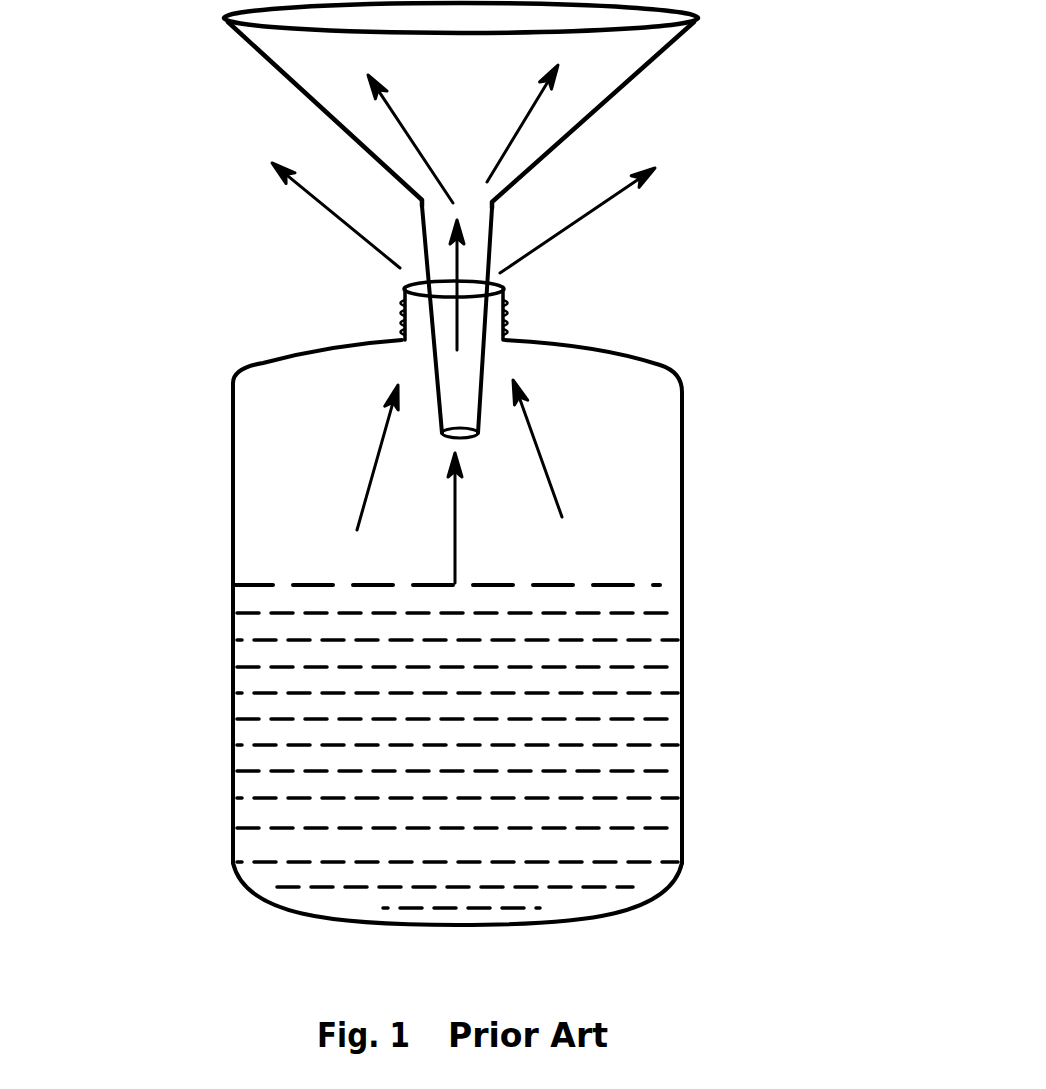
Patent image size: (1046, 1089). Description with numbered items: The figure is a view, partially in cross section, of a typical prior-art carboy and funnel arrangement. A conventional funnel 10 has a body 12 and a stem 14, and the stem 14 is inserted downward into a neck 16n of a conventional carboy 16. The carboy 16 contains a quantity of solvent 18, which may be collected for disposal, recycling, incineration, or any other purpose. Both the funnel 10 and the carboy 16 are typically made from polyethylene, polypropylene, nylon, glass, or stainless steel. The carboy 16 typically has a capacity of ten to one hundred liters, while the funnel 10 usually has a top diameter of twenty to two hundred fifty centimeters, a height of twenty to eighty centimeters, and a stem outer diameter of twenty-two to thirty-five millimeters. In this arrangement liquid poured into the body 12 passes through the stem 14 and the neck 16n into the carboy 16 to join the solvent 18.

The funnel 10 is at (483, 240).
The body 12 is at (307, 98).
The stem 14 is at (497, 372).
The carboy 16 is at (581, 603).
The neck 16n is at (507, 313).
The solvent 18 is at (542, 708).